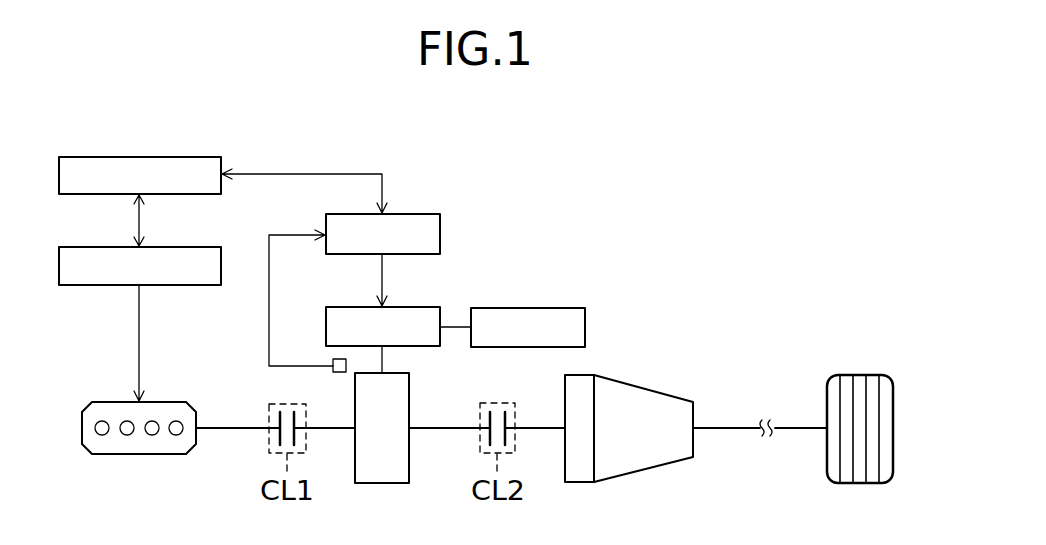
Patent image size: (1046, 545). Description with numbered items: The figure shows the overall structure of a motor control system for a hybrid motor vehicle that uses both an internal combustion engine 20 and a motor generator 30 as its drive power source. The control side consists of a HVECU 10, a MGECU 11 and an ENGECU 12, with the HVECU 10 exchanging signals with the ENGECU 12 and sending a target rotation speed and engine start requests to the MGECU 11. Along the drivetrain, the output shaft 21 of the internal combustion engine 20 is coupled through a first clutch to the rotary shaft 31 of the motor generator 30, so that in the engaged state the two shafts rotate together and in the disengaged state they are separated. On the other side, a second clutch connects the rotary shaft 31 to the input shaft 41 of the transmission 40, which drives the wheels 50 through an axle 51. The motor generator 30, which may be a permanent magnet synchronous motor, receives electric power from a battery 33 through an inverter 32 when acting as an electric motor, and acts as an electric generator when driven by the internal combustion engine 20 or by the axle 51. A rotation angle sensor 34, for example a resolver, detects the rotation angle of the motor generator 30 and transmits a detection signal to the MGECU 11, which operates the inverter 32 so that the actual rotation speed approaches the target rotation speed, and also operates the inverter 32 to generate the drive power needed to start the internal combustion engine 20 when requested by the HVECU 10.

The HVECU (hybrid vehicle ECU) 10 is at (210, 157).
The MGECU (motor generator ECU) 11 is at (428, 214).
The ENGECU (engine ECU) 12 is at (210, 249).
The internal combustion engine 20 is at (180, 402).
The output shaft 21 is at (235, 427).
The motor generator 30 is at (397, 484).
The rotary shaft 31 is at (324, 427).
The inverter 32 is at (428, 307).
The battery 33 is at (574, 307).
The rotation angle sensor 34 is at (333, 363).
The transmission 40 is at (648, 391).
The input shaft 41 is at (534, 427).
The wheels 50 is at (863, 375).
The axle 51 is at (794, 427).